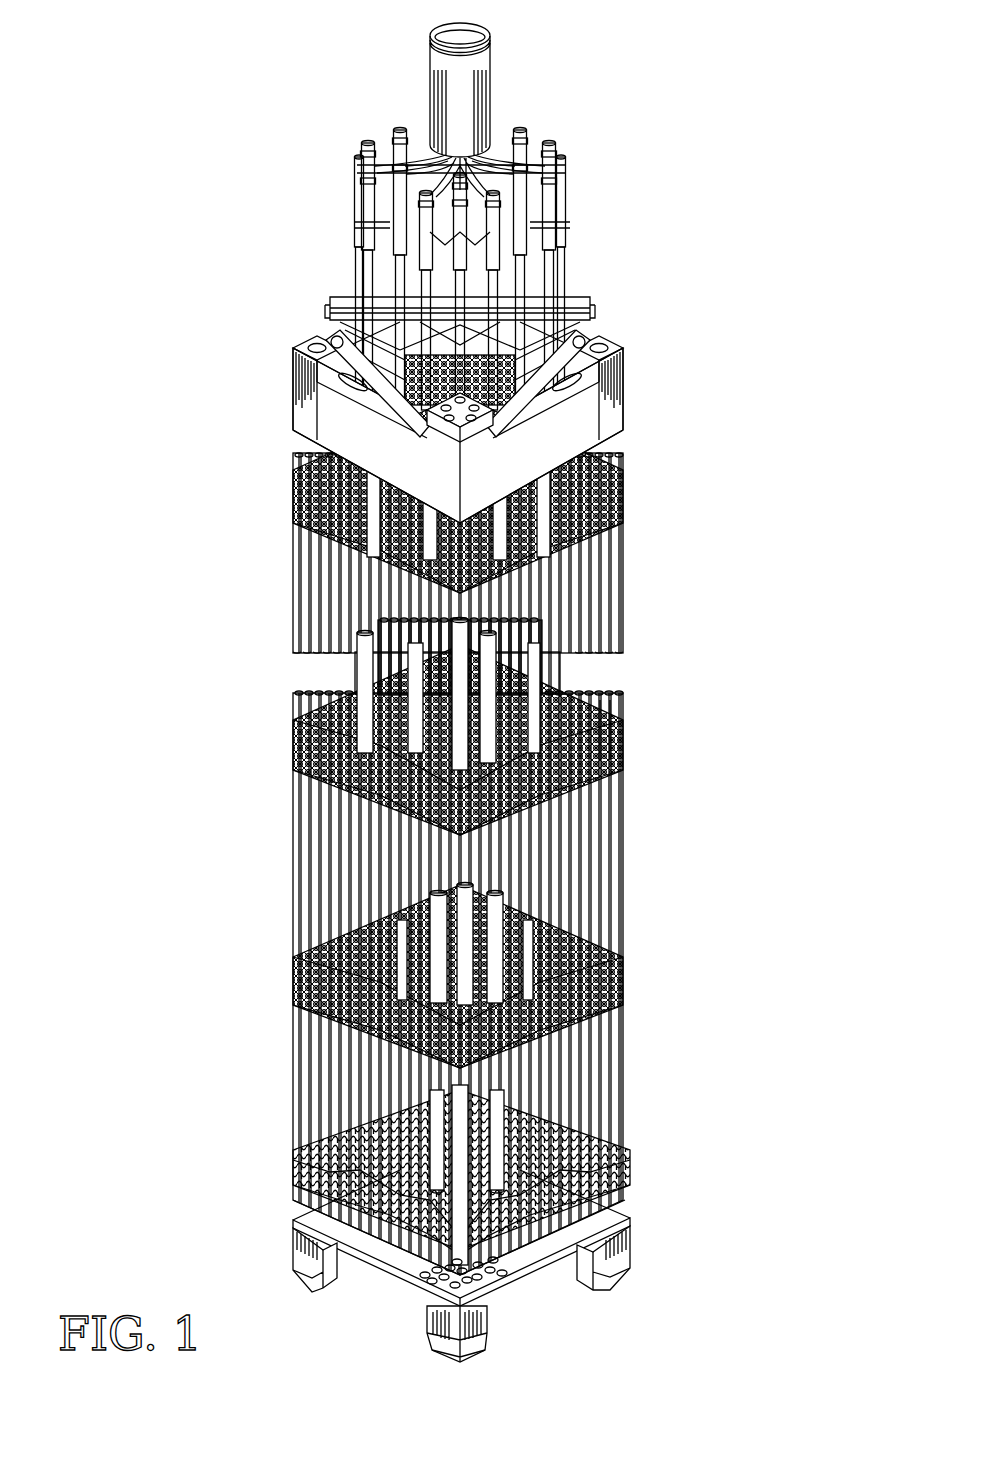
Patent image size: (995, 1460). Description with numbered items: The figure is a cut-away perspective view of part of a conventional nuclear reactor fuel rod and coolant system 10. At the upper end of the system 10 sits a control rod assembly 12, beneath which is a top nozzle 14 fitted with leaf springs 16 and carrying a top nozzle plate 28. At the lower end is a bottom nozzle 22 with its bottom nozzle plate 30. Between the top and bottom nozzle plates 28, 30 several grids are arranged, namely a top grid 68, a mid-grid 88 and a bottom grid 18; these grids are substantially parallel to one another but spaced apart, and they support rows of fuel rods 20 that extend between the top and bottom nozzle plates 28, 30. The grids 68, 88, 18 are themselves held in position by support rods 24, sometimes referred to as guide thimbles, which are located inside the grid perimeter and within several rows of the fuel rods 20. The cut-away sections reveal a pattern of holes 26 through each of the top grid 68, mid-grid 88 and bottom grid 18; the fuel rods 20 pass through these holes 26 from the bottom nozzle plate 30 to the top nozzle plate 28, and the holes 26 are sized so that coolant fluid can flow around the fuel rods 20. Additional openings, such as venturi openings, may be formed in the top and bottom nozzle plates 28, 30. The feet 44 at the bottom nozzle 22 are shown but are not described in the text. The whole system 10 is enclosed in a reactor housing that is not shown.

The nuclear reactor fuel rod and coolant system 10 is at (458, 692).
The control rod assembly 12 is at (590, 327).
The top nozzle 14 is at (608, 415).
The leaf springs 16 is at (357, 363).
The bottom grid 18 is at (590, 975).
The fuel rods 20 is at (618, 606).
The bottom nozzle 22 is at (448, 1266).
The support rods 24 is at (543, 715).
The holes 26 is at (338, 542).
The top nozzle plate 28 is at (427, 392).
The bottom nozzle plate 30 is at (485, 1278).
The legs 44 is at (296, 1255).
The top grid 68 is at (618, 498).
The mid-grid 88 is at (628, 762).